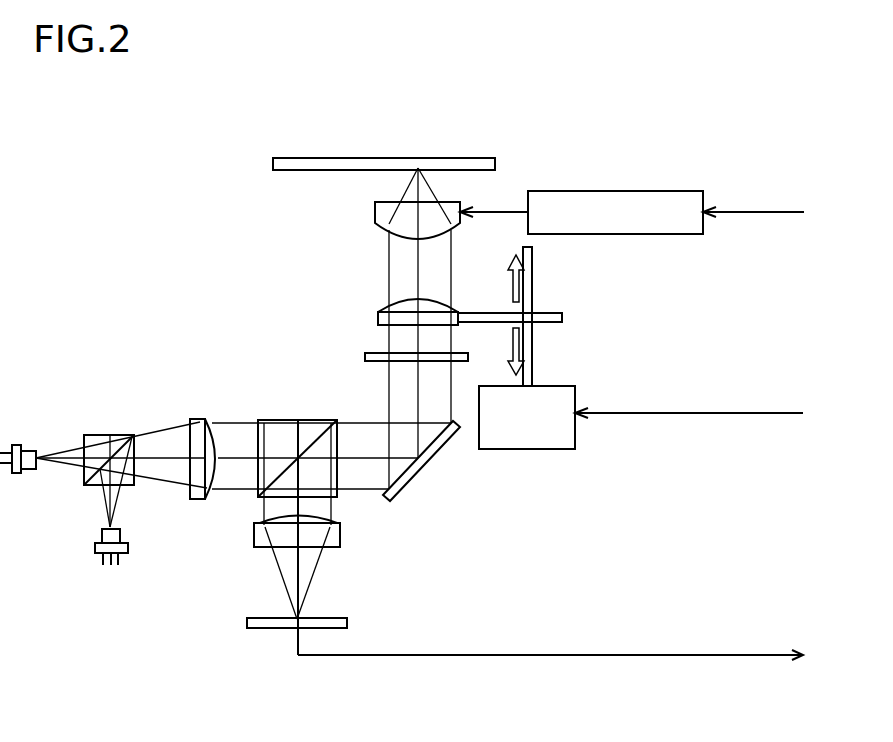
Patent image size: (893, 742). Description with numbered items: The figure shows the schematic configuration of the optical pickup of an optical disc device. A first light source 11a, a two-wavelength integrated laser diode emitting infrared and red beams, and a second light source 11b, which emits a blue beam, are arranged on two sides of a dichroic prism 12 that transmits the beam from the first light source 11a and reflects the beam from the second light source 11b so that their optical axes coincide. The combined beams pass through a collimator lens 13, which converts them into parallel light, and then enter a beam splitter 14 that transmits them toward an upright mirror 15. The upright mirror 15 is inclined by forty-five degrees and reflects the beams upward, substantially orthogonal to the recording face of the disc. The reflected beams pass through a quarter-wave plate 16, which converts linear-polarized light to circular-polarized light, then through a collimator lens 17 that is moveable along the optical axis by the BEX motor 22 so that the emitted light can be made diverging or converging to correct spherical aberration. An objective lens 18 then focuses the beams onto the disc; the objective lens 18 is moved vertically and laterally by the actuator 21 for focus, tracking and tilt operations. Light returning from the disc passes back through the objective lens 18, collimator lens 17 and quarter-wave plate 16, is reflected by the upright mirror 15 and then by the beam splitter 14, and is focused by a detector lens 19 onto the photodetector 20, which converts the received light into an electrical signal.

The first light source 11a is at (17, 445).
The second light source 11b is at (130, 547).
The dichroic prism 12 is at (112, 435).
The collimator lens 13 is at (199, 419).
The beam splitter 14 is at (300, 419).
The upright mirror 15 is at (425, 467).
The quarter-wave plate 16 is at (469, 357).
The collimator lens 17 is at (459, 311).
The objective lens 18 is at (461, 203).
The detector lens 19 is at (340, 524).
The photodetector 20 is at (347, 620).
The actuator 21 is at (610, 191).
The BEX motor 22 is at (560, 386).